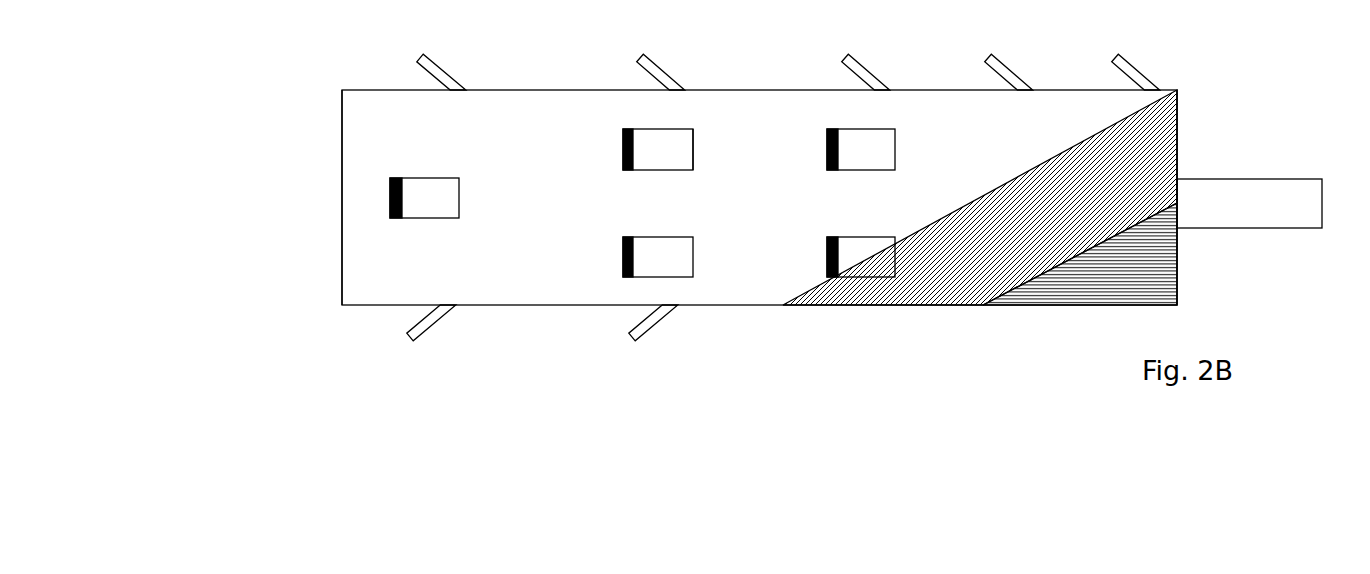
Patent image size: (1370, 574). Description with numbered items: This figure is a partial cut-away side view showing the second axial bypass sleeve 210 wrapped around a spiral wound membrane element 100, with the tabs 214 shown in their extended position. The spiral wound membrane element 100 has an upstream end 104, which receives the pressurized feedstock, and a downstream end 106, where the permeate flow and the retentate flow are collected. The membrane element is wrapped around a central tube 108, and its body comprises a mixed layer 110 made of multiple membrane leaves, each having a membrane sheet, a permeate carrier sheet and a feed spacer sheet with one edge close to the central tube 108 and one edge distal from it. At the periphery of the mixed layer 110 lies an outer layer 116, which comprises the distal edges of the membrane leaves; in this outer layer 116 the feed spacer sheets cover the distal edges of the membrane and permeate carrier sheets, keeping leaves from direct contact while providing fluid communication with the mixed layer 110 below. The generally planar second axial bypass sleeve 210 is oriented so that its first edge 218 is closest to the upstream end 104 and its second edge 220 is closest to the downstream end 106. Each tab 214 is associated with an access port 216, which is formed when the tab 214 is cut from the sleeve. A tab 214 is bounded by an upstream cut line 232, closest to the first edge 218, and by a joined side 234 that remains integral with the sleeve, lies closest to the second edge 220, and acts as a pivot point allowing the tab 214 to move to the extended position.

The spiral wound membrane element 100 is at (1194, 147).
The upstream end 104 is at (306, 197).
The downstream end 106 is at (1202, 277).
The central tube 108 is at (1270, 187).
The mixed layer 110 is at (1098, 273).
The outer layer 116 is at (922, 275).
The second axial bypass sleeve 210 is at (734, 212).
The tabs 214 is at (433, 57).
The access ports 216 is at (830, 130).
The first edge 218 is at (342, 90).
The second edge 220 is at (1177, 90).
The upstream cut line 232 is at (623, 130).
The joined side 234 is at (690, 130).